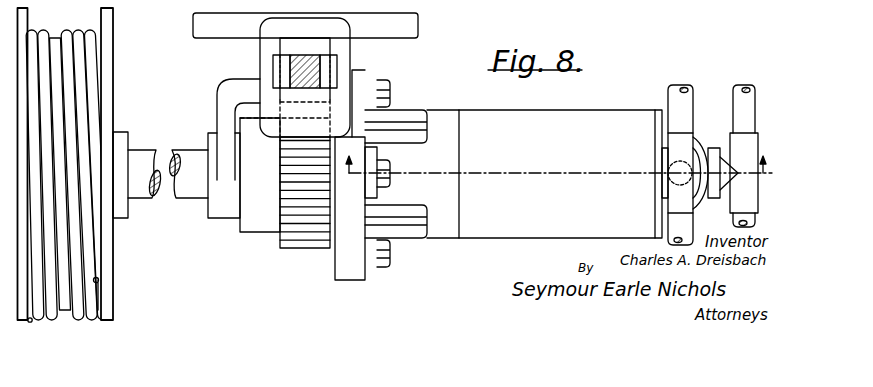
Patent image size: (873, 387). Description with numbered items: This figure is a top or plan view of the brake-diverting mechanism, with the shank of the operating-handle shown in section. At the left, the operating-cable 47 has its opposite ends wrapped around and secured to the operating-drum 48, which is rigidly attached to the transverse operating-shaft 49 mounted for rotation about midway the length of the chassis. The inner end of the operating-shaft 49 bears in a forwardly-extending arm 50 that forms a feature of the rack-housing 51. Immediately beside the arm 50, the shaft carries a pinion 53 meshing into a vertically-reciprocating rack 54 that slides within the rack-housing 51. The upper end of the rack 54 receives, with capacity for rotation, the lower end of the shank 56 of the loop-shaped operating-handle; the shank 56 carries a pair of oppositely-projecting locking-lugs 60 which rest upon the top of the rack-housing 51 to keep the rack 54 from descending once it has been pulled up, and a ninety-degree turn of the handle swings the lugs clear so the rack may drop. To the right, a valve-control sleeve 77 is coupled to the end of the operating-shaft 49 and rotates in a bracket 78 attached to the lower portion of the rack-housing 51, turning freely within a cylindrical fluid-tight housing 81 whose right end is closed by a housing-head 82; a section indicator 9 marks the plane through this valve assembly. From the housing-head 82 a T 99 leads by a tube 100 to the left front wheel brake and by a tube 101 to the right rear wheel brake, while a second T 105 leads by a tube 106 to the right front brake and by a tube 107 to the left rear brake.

The section line for Fig. 9 is at (557, 158).
The operating-cable 47 is at (56, 33).
The operating-drum 48 is at (113, 30).
The operating-shaft 49 is at (177, 200).
The forwardly-extending arm 50 is at (217, 126).
The rack-housing 51 is at (306, 8).
The pinion 53 is at (291, 249).
The rack 54 is at (307, 108).
The shank 56 is at (310, 55).
The locking-lugs 60 is at (273, 70).
The valve-control sleeve 77 is at (409, 122).
The bracket 78 is at (436, 241).
The cylindrical fluid-tight housing 81 is at (526, 240).
The housing-head 82 is at (659, 110).
The T 99 is at (696, 135).
The tube 100 is at (694, 96).
The tube 101 is at (694, 236).
The T 105 is at (760, 141).
The tube 106 is at (756, 100).
The tube 107 is at (757, 220).